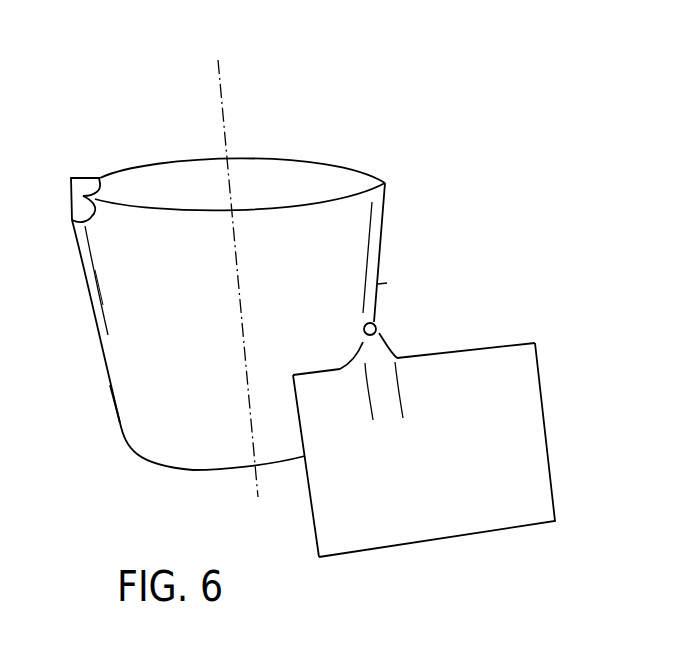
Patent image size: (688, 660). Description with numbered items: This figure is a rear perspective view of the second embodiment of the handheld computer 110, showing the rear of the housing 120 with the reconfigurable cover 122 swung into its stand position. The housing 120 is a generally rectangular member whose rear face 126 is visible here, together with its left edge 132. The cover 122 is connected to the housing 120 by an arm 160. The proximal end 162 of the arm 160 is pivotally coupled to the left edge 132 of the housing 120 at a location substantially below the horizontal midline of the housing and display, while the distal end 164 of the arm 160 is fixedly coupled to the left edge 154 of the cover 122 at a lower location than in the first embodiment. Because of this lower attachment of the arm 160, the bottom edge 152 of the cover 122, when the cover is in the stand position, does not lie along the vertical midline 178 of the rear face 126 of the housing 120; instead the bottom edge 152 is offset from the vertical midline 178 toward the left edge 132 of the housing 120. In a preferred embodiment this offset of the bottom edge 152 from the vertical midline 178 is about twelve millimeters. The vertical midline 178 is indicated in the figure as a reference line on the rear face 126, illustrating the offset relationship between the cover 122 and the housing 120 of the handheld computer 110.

The handheld computer 110 is at (269, 282).
The housing 120 is at (385, 204).
The cover 122 is at (434, 426).
The rear face 126 is at (118, 423).
The left edge 132 is at (378, 284).
The bottom edge 152 is at (312, 515).
The left edge 154 is at (527, 342).
The arm 160 is at (380, 336).
The proximal end 162 is at (377, 322).
The distal end 164 is at (397, 350).
The vertical midline 178 is at (257, 470).